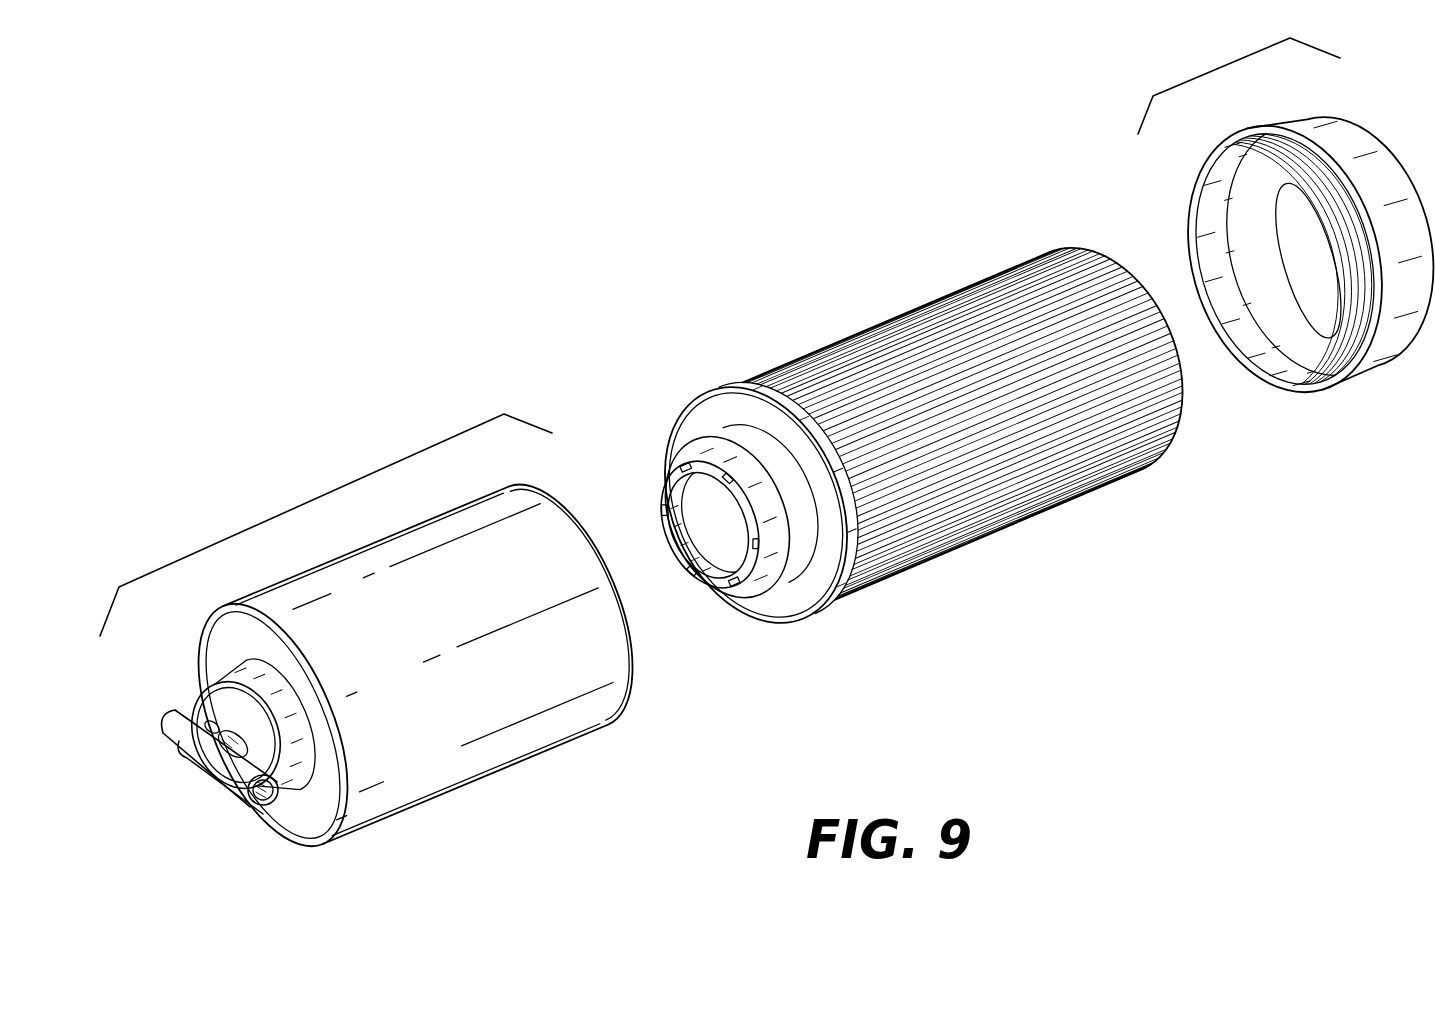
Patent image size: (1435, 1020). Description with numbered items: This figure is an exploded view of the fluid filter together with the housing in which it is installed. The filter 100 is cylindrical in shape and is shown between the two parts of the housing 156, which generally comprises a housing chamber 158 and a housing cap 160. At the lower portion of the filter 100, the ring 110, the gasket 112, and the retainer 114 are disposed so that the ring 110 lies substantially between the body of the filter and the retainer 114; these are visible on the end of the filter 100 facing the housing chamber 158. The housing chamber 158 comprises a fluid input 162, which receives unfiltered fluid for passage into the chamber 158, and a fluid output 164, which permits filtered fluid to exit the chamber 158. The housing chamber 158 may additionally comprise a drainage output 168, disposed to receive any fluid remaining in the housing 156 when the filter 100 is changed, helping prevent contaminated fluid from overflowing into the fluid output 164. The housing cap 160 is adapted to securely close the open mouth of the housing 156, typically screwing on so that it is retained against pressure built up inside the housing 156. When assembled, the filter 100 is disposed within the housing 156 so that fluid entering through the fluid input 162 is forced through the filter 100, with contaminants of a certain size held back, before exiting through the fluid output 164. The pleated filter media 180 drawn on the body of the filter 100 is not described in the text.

The filter cartridge 100 is at (936, 459).
The end cap 110 is at (823, 592).
The central opening 112 is at (698, 531).
The raised annular boss 114 is at (792, 590).
The housing assembly 156 is at (236, 535).
The housing body 158 is at (505, 772).
The retaining ring 160 is at (1404, 362).
The mounting tab 162 is at (186, 760).
The tube end fitting 164 is at (272, 808).
The tube 168 is at (174, 720).
The pleated filter media 180 is at (892, 314).